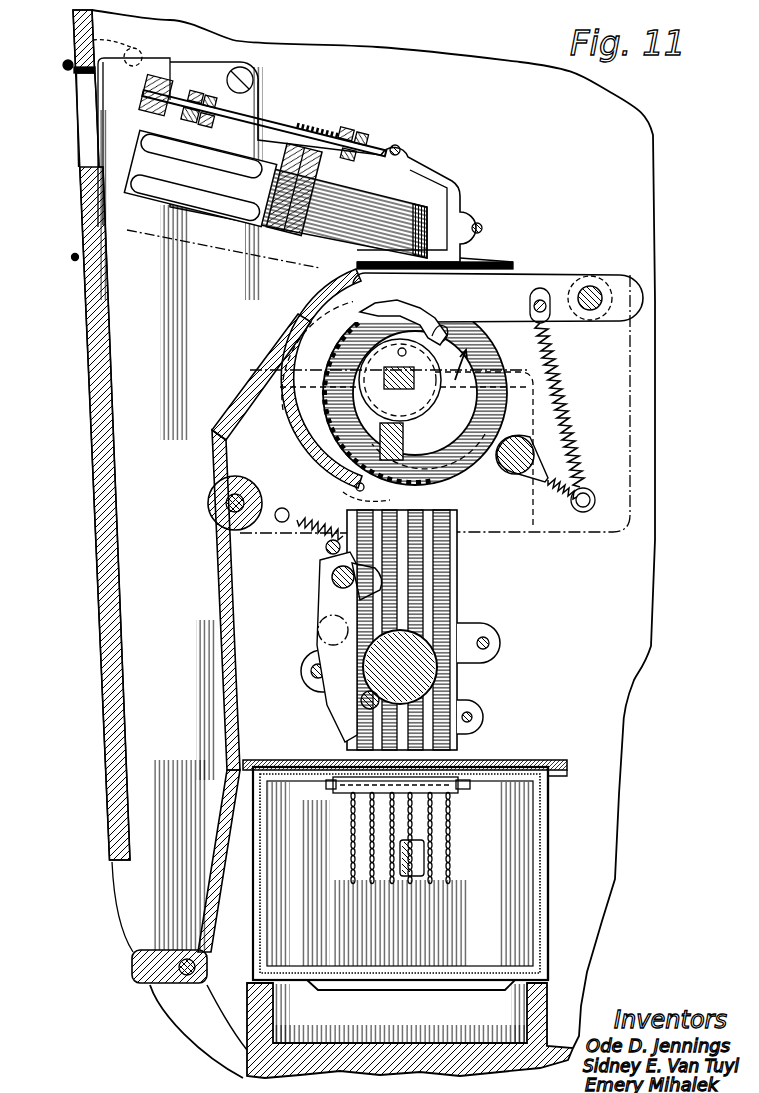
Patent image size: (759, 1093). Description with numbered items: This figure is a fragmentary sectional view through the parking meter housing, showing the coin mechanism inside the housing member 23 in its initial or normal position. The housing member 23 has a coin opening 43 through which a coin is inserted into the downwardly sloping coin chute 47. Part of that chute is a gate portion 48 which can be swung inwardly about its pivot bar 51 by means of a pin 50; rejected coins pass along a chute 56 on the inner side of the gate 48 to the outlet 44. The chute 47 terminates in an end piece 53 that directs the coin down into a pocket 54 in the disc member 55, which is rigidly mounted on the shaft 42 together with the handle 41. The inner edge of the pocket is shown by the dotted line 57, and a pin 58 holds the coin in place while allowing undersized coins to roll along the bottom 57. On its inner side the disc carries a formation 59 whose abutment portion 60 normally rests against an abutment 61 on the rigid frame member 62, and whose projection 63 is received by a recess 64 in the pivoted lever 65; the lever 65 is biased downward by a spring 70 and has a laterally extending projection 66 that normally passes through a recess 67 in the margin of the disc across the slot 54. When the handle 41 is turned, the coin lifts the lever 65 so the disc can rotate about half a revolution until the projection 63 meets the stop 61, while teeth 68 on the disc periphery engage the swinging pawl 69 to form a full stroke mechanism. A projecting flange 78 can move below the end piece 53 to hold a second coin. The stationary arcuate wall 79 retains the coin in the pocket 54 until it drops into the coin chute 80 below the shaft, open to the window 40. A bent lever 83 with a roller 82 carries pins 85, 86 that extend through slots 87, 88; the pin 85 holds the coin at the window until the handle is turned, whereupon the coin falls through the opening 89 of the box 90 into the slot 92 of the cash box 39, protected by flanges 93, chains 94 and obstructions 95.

The housing member 23 is at (93, 398).
The cash box 39 is at (545, 878).
The window 40 is at (430, 672).
The handle 41 is at (370, 367).
The shaft 42 is at (412, 385).
The coin opening 43 is at (77, 97).
The outlet 44 is at (134, 950).
The coin chute 47 is at (193, 206).
The gate portion 48 is at (133, 232).
The pin 50 is at (142, 48).
The pivot bar 51 is at (300, 118).
The end piece 53 is at (440, 190).
The pocket 54 is at (372, 352).
The disc member 55 is at (285, 350).
The chute 56 is at (97, 380).
The inner edge of pocket 57 is at (560, 372).
The pin 58 is at (480, 265).
The formation 59 is at (545, 345).
The abutment portion 60 is at (380, 440).
The abutment 61 is at (385, 415).
The rigid frame member 62 is at (572, 535).
The projection 63 is at (442, 330).
The recess 64 is at (447, 300).
The pivoted lever 65 is at (530, 290).
The laterally extending projection 66 is at (365, 262).
The recess 67 is at (287, 217).
The teeth 68 is at (283, 452).
The swinging pawl 69 is at (505, 472).
The spring 70 is at (565, 430).
The projecting flange 78 is at (470, 262).
The stationary arcuate wall 79 is at (272, 398).
The coin chute 80 is at (405, 565).
The roller 82 is at (376, 500).
The bent lever 83 is at (330, 580).
The pin 85 is at (360, 703).
The pin 86 is at (335, 585).
The slot 87 is at (288, 528).
The slot 88 is at (352, 598).
The opening 89 is at (470, 762).
The box 90 is at (548, 835).
The slot 92 is at (345, 793).
The flanges 93 is at (462, 793).
The chains 94 is at (355, 886).
The obstructions 95 is at (405, 878).